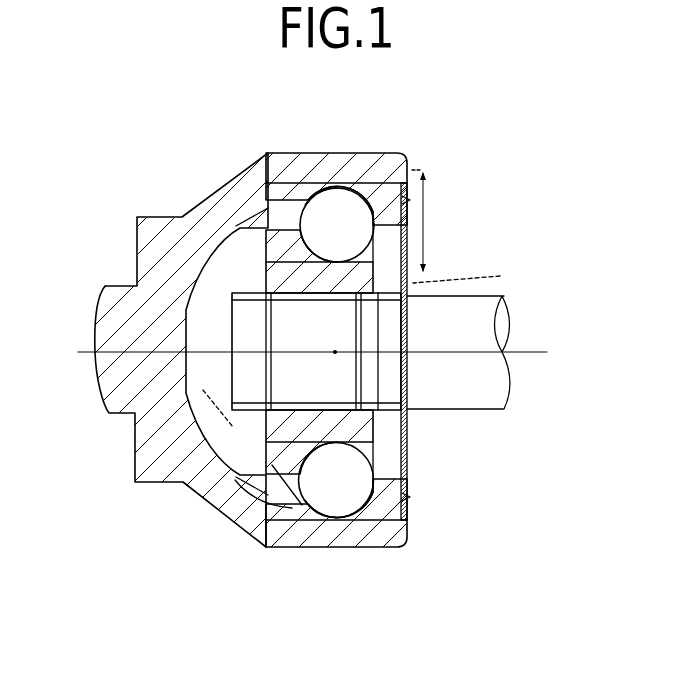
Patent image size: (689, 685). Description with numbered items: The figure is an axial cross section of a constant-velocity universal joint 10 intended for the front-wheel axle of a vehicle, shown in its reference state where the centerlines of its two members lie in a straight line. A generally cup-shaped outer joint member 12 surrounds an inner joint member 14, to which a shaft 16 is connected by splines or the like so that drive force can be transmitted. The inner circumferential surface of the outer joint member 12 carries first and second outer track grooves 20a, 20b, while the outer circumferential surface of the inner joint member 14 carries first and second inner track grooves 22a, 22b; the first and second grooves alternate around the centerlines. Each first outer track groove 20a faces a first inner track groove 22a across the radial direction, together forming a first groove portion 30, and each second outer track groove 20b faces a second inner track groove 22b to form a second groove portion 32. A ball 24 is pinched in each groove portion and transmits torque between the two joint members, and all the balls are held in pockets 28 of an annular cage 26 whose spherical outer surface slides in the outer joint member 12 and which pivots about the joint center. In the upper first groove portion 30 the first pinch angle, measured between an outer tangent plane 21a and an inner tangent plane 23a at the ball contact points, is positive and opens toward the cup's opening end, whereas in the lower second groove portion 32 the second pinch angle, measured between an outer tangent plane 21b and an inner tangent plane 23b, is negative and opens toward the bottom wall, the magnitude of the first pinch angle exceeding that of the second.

The constant-velocity universal joint 10 is at (166, 173).
The outer joint member 12 is at (142, 452).
The inner joint member 14 is at (350, 422).
The shaft 16 is at (483, 398).
The first outer track groove 20a is at (272, 198).
The second outer track groove 20b is at (388, 523).
The outer tangent plane 21a is at (370, 180).
The outer tangent plane 21b is at (247, 530).
The first inner track groove 22a is at (383, 262).
The second inner track groove 22b is at (377, 450).
The inner tangent plane 23a is at (477, 276).
The inner tangent plane 23b is at (214, 396).
The ball 24 is at (327, 203).
The cage 26 is at (233, 430).
The pocket 28 is at (355, 186).
The first groove portion 30 is at (416, 200).
The second groove portion 32 is at (414, 497).